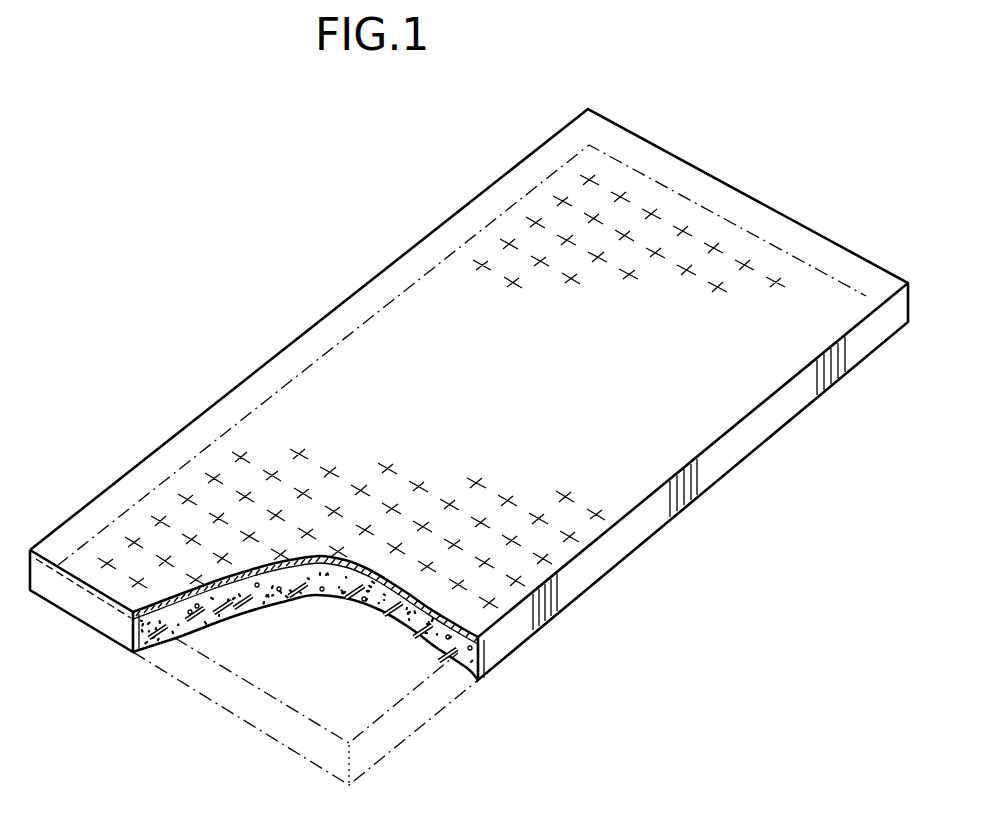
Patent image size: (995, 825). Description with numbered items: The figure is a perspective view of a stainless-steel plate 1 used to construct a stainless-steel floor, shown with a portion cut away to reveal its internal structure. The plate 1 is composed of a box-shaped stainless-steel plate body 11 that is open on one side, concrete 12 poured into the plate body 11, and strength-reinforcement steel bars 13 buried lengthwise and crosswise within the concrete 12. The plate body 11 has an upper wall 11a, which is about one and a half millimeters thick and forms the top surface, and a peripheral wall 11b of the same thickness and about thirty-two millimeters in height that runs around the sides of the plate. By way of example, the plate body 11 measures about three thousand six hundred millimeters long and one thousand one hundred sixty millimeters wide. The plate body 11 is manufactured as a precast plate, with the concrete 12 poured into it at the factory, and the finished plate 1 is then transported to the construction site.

The stainless-steel plate 1 is at (263, 284).
The stainless-steel plate body 11 is at (683, 160).
The upper wall 11a is at (733, 342).
The peripheral wall 11b is at (722, 460).
The concrete 12 is at (414, 616).
The strength-reinforcement steel bars 13 is at (350, 600).